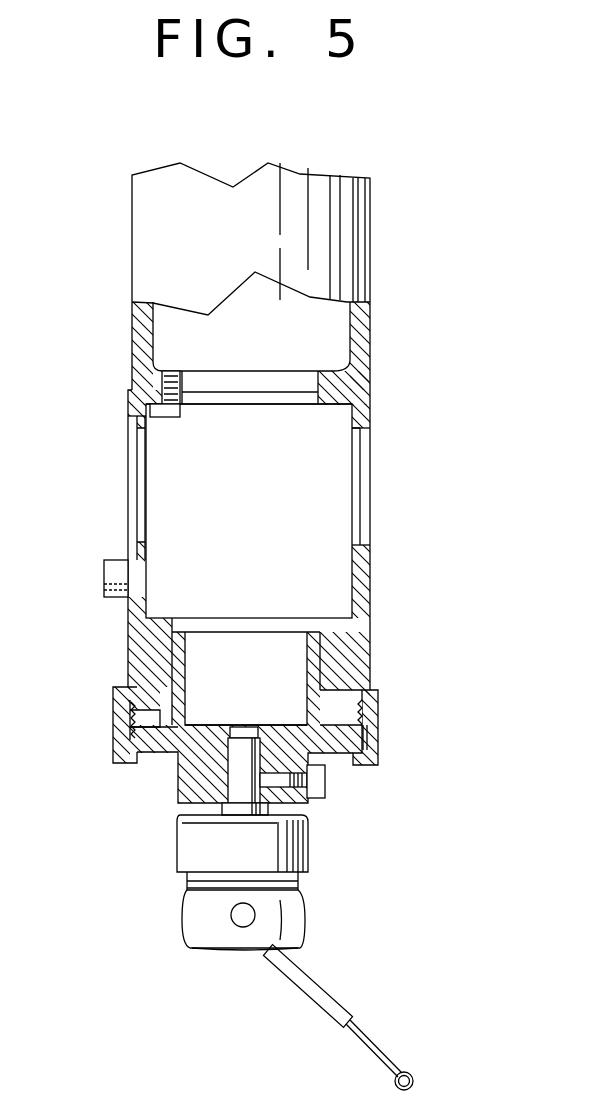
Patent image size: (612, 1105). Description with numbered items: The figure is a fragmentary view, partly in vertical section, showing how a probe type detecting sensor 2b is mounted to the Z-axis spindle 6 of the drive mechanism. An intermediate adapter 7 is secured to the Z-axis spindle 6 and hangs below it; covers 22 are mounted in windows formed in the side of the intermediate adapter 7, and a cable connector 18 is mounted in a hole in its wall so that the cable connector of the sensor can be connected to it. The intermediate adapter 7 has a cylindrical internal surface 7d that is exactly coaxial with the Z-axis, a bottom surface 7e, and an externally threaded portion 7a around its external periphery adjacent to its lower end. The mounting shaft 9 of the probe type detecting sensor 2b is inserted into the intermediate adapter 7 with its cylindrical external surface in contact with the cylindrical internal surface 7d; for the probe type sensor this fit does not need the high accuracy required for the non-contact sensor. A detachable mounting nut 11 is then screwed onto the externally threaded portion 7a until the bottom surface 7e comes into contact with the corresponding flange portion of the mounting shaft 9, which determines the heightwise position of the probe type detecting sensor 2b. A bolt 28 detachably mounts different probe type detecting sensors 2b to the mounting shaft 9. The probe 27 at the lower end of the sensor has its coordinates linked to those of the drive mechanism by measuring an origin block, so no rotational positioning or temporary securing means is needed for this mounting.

The Z-axis spindle 6 is at (373, 243).
The intermediate adapter 7 is at (372, 586).
The covers 22 is at (129, 490).
The cable connector 18 is at (104, 585).
The mounting shaft 9 is at (352, 665).
The externally threaded portion 7a is at (370, 681).
The cylindrical internal surface 7d is at (157, 657).
The bottom surface 7e is at (158, 765).
The detachable mounting nut 11 is at (378, 714).
The bolt 28 is at (327, 790).
The probe type detecting sensor 2b is at (322, 857).
The probe 27 is at (409, 1076).